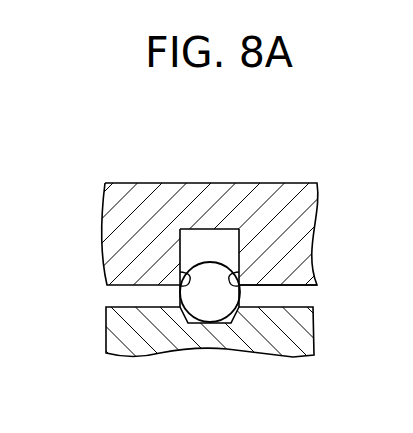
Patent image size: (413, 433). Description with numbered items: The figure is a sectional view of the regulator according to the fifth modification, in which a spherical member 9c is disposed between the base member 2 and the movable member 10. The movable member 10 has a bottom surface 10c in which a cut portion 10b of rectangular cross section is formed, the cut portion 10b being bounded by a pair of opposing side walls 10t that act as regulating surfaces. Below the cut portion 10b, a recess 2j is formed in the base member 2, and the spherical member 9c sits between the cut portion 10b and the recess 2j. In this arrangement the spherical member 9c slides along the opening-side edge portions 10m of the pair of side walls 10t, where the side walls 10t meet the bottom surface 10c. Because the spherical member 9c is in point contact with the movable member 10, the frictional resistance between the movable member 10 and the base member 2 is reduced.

The movable member 10 is at (282, 193).
The side walls 10t is at (238, 250).
The cut portion 10b is at (180, 247).
The opening-side edge portions 10m is at (238, 276).
The bottom surface 10c is at (297, 286).
The spherical member 9c is at (190, 291).
The base member 2 is at (283, 343).
The recess 2j is at (193, 320).